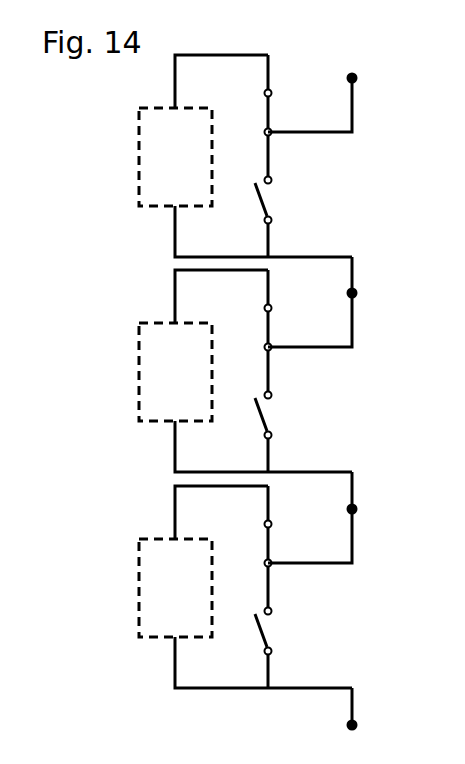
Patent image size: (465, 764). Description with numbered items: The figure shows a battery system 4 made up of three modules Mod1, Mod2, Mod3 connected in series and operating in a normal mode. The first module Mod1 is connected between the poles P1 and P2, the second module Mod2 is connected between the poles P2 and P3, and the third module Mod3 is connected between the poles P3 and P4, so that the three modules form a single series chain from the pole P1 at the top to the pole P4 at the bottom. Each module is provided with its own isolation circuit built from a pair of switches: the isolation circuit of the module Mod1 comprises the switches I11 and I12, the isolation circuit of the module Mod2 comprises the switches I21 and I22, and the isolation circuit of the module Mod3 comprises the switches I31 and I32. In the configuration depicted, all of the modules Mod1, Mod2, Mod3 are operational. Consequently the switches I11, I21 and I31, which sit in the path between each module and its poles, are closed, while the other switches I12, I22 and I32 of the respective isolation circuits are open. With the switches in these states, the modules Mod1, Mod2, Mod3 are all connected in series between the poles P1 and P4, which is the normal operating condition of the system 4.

The system 4 is at (394, 415).
The module Mod1 is at (138, 157).
The module Mod2 is at (138, 372).
The module Mod3 is at (138, 588).
The pole P1 is at (357, 78).
The pole P2 is at (357, 293).
The pole P3 is at (357, 509).
The pole P4 is at (357, 722).
The switch I11 is at (273, 109).
The switch I12 is at (273, 198).
The switch I21 is at (273, 324).
The switch I22 is at (273, 413).
The switch I31 is at (273, 540).
The switch I32 is at (273, 629).